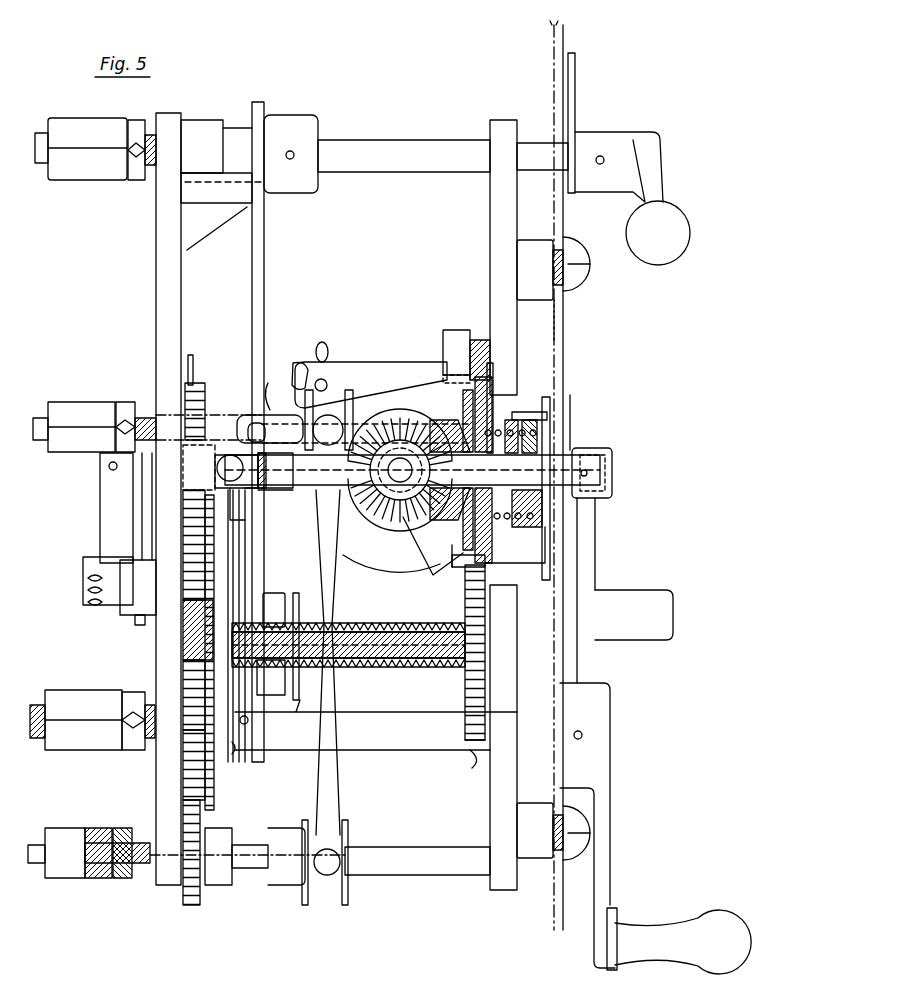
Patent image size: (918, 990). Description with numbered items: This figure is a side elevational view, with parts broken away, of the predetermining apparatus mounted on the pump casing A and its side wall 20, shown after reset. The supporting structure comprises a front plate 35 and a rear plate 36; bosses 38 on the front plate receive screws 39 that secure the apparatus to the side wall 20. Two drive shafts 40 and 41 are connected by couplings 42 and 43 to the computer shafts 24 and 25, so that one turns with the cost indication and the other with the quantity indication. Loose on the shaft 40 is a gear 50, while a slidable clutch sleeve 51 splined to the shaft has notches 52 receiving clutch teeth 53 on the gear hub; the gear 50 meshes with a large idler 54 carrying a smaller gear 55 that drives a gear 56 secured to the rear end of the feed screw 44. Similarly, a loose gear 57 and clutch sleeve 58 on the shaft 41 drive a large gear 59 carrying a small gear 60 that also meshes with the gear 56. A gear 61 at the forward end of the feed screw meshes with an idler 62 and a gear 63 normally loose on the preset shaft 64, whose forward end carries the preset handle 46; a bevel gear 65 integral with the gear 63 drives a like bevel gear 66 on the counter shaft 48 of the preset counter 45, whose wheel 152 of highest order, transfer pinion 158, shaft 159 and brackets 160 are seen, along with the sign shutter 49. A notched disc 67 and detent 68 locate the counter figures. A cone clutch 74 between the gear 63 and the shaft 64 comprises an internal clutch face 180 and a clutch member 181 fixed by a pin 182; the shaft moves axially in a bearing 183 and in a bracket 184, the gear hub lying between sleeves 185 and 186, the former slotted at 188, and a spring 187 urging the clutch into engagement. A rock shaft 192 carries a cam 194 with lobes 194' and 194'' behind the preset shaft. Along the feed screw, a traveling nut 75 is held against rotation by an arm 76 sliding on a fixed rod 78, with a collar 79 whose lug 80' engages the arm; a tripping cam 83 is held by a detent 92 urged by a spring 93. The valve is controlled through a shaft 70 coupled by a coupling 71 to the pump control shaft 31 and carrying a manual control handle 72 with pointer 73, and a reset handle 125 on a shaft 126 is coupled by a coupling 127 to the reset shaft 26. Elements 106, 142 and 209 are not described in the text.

The side wall 20 is at (568, 313).
The shaft 24 is at (42, 418).
The shaft 25 is at (38, 845).
The reset shaft 26 is at (40, 705).
The control shaft 31 is at (44, 130).
The front plate 35 is at (505, 130).
The rear plate 36 is at (175, 124).
The bosses 38 is at (540, 242).
The screws 39 is at (582, 251).
The drive shaft 40 is at (148, 412).
The drive shaft 41 is at (135, 866).
The coupling 42 is at (92, 408).
The coupling 43 is at (88, 871).
The feed screw 44 is at (382, 668).
The preset counter 45 is at (418, 576).
The preset handle 46 is at (585, 533).
The counter shaft 48 is at (385, 500).
The sign shutter 49 is at (445, 580).
The gear 50 is at (200, 385).
The clutch sleeve 51 is at (305, 408).
The notches 52 is at (291, 378).
The clutch teeth 53 is at (245, 428).
The idler 54 is at (183, 510).
The gear 55 is at (205, 520).
The gear 56 is at (205, 618).
The gear 57 is at (185, 893).
The clutch sleeve 58 is at (290, 882).
The gear 59 is at (190, 790).
The gear 60 is at (183, 770).
The gear 61 is at (468, 681).
The idler 62 is at (468, 701).
The gear 63 is at (478, 340).
The preset shaft 64 is at (596, 478).
The bevel gear 65 is at (445, 428).
The bevel gear 66 is at (405, 426).
The notched disc 67 is at (460, 568).
The detent 68 is at (455, 330).
The shaft 70 is at (340, 146).
The coupling 71 is at (88, 136).
The manual control handle 72 is at (650, 172).
The pointer 73 is at (576, 90).
The cone clutch 74 is at (470, 400).
The traveling nut 75 is at (278, 600).
The arm 76 is at (296, 600).
The fixed rod 78 is at (425, 661).
The collar 79 is at (271, 677).
The lug 80' is at (293, 719).
The tripping cam 83 is at (230, 763).
The detent 92 is at (248, 721).
The spring 93 is at (238, 749).
The frame bar 106 is at (262, 244).
The reset handle 125 is at (672, 926).
The shaft 126 is at (385, 746).
The coupling 127 is at (90, 702).
The connecting rod 142 is at (316, 779).
The counter wheel 152 is at (390, 566).
The transfer pinion 158 is at (330, 351).
The shaft 159 is at (328, 378).
The brackets 160 is at (371, 385).
The internal clutch face 180 is at (493, 376).
The clutch member 181 is at (485, 420).
The pin 182 is at (545, 433).
The bearing 183 is at (548, 446).
The bracket 184 is at (268, 490).
The sleeve 185 is at (498, 457).
The sleeve 186 is at (272, 502).
The spring 187 is at (533, 524).
The slot 188 is at (612, 456).
The rock shaft 192 is at (220, 467).
The cam 194 is at (279, 470).
The lobe 194' is at (257, 429).
The lobe 194'' is at (276, 504).
The pin 209 is at (192, 355).
The pump casing A is at (573, 40).